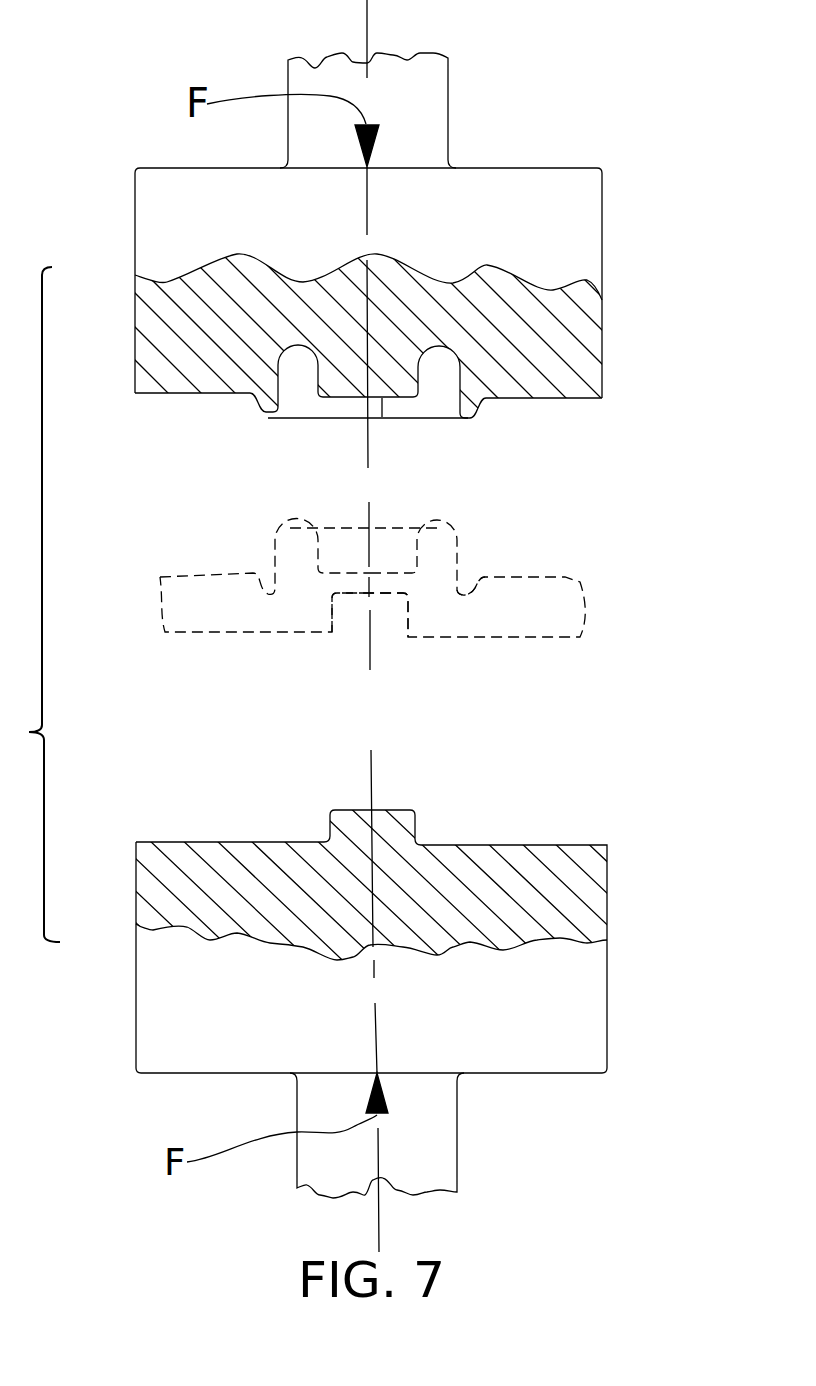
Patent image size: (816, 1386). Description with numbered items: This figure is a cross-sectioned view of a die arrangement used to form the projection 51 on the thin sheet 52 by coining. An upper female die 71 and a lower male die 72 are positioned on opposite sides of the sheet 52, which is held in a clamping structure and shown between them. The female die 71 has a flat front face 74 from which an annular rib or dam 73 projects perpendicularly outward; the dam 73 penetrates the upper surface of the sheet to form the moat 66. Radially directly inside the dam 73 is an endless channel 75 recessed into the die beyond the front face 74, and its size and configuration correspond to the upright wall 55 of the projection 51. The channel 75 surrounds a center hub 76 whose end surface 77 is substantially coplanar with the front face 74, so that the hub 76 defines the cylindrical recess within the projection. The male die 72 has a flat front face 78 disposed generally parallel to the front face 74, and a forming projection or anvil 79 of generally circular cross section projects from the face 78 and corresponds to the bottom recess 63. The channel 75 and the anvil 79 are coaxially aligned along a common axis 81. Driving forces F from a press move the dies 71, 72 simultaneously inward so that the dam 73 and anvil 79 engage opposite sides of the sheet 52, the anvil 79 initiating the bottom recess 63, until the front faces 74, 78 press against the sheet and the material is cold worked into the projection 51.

The projection 51 is at (262, 537).
The thin sheet 52 is at (565, 578).
The upright wall 55 is at (438, 534).
The bottom recess 63 is at (398, 622).
The moat 66 is at (475, 585).
The female die 71 is at (580, 233).
The male die 72 is at (582, 1001).
The annular dam 73 is at (270, 418).
The flat front face 74 is at (582, 398).
The endless channel 75 is at (442, 378).
The center hub 76 is at (382, 417).
The end surface 77 is at (331, 403).
The flat front face 78 is at (170, 842).
The anvil 79 is at (347, 820).
The common axis 81 is at (368, 227).